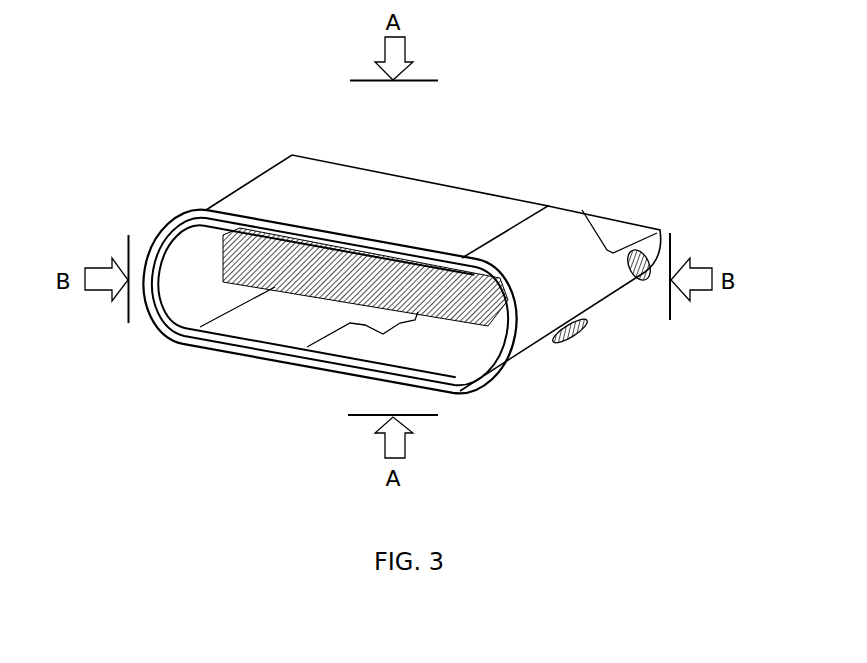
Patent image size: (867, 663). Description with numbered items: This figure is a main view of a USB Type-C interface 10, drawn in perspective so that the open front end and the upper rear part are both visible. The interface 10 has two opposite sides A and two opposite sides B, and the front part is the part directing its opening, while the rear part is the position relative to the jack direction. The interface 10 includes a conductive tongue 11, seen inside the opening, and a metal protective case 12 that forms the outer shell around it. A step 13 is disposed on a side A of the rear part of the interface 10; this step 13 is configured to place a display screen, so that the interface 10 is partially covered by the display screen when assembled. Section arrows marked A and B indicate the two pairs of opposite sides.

The USB Type-C interface 10 is at (173, 366).
The conductive tongue 11 is at (224, 241).
The metal protective case 12 is at (348, 167).
The step 13 is at (626, 201).